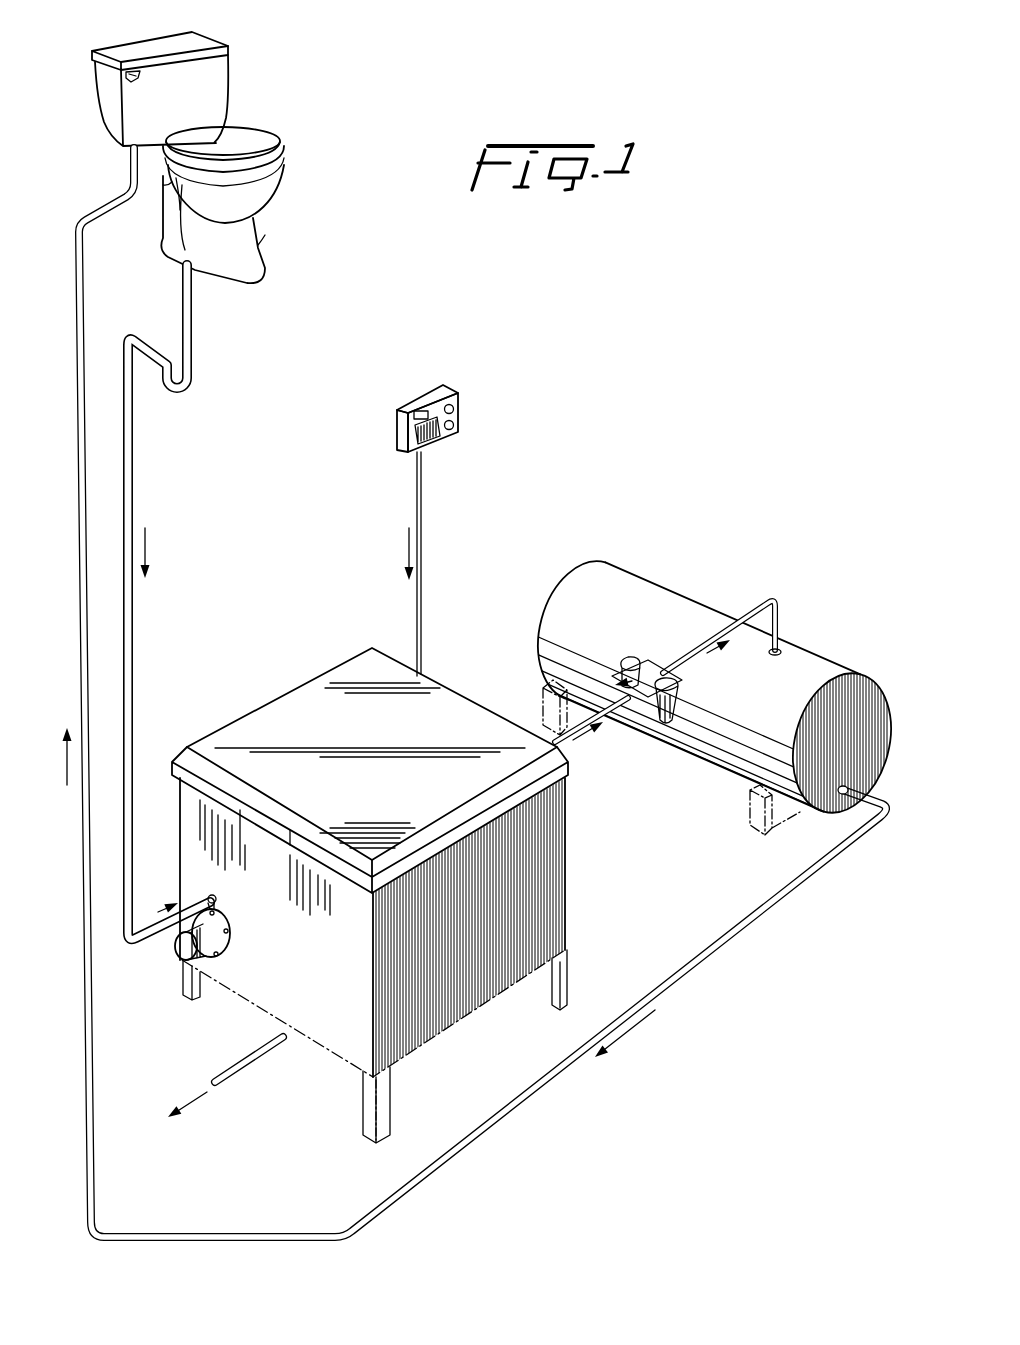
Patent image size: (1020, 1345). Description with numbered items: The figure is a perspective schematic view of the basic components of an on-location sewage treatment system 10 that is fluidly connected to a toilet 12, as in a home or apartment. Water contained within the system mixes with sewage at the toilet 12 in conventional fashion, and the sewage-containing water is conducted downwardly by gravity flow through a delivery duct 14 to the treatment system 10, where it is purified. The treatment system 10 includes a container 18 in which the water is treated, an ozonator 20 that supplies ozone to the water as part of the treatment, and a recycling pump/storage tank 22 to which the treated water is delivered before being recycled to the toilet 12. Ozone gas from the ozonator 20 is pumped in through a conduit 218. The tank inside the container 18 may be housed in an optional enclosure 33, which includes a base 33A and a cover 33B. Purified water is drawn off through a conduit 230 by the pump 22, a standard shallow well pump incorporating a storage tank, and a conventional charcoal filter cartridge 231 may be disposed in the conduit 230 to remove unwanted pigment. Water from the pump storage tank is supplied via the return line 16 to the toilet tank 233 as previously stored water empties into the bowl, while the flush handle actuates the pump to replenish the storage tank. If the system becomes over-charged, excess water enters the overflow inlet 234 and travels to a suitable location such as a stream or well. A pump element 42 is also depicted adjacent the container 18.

The sewage treatment system 10 is at (345, 645).
The toilet 12 is at (242, 86).
The delivery duct 14 is at (132, 503).
The return line 16 is at (82, 477).
The container 18 is at (423, 707).
The ozonator 20 is at (464, 396).
The recycling pump/storage tank 22 is at (835, 643).
The enclosure 33 is at (534, 886).
The base 33A is at (567, 838).
The cover 33B is at (233, 730).
The pump 42 is at (176, 964).
The conduit 218 is at (422, 513).
The conduit 230 is at (697, 640).
The charcoal filter cartridge 231 is at (668, 732).
The toilet tank 233 is at (222, 60).
The overflow inlet 234 is at (257, 1062).